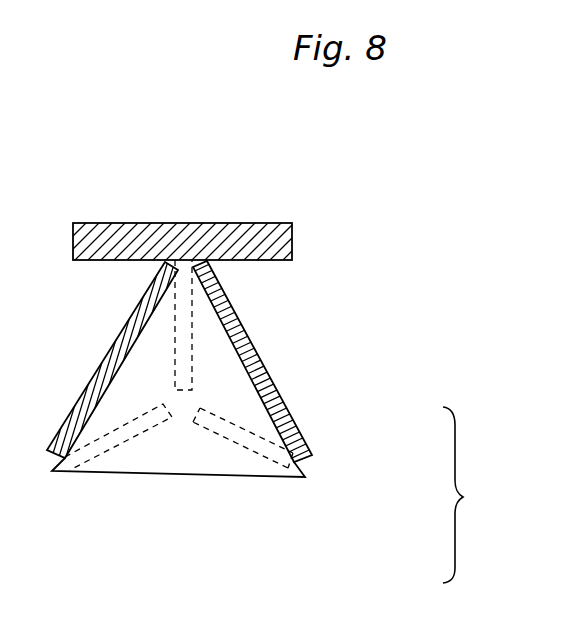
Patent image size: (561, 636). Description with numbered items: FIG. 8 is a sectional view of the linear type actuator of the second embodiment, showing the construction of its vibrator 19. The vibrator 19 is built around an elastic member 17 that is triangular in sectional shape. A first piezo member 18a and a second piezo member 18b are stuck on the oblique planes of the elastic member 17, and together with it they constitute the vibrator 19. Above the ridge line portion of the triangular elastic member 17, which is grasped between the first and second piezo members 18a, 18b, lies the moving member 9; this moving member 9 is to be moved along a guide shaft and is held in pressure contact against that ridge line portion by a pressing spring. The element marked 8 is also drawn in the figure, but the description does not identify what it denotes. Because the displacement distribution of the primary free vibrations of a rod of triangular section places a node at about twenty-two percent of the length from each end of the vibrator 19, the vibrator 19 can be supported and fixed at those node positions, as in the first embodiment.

The moving member 9 is at (275, 224).
The central support member 8 is at (192, 323).
The elastic member 17 is at (213, 363).
The first piezo member 18a is at (310, 447).
The second piezo member 18b is at (67, 412).
The vibrator 19 is at (487, 495).